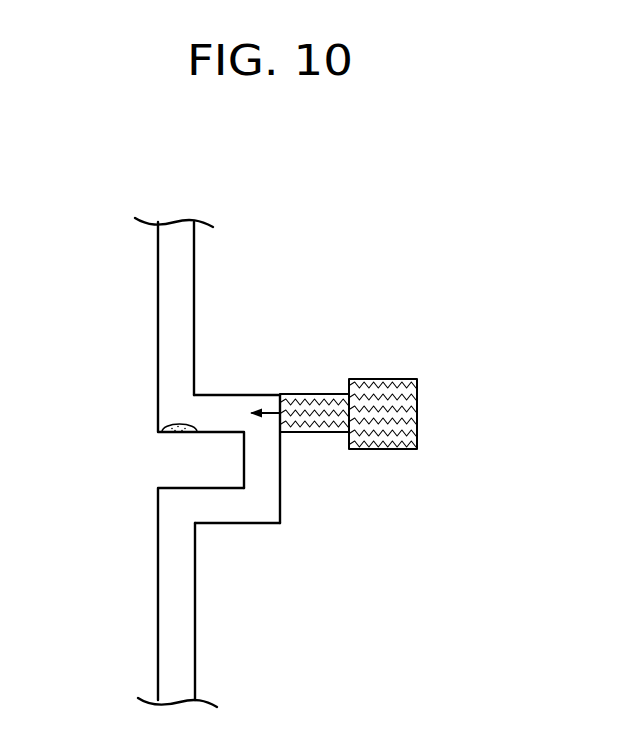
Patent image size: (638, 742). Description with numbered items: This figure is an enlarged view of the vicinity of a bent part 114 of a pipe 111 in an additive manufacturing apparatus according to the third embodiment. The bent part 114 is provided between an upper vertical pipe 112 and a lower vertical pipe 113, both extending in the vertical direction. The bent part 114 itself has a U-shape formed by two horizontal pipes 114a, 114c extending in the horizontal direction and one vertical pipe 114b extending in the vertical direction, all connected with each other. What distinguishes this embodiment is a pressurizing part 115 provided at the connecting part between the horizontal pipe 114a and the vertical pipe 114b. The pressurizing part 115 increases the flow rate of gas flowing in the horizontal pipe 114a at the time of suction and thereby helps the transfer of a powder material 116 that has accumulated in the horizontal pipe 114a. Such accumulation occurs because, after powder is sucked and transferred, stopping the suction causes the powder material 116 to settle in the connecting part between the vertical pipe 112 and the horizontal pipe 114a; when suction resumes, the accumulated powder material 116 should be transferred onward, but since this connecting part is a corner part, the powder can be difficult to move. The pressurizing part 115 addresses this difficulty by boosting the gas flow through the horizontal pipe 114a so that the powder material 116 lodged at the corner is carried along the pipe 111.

The pipe 111 is at (305, 225).
The vertical pipe 112 is at (158, 318).
The vertical pipe 113 is at (158, 587).
The bent part 114 is at (288, 479).
The horizontal pipe 114a is at (237, 394).
The vertical pipe 114b is at (281, 490).
The horizontal pipe 114c is at (228, 523).
The pressurizing part 115 is at (387, 379).
The powder material 116 is at (178, 423).